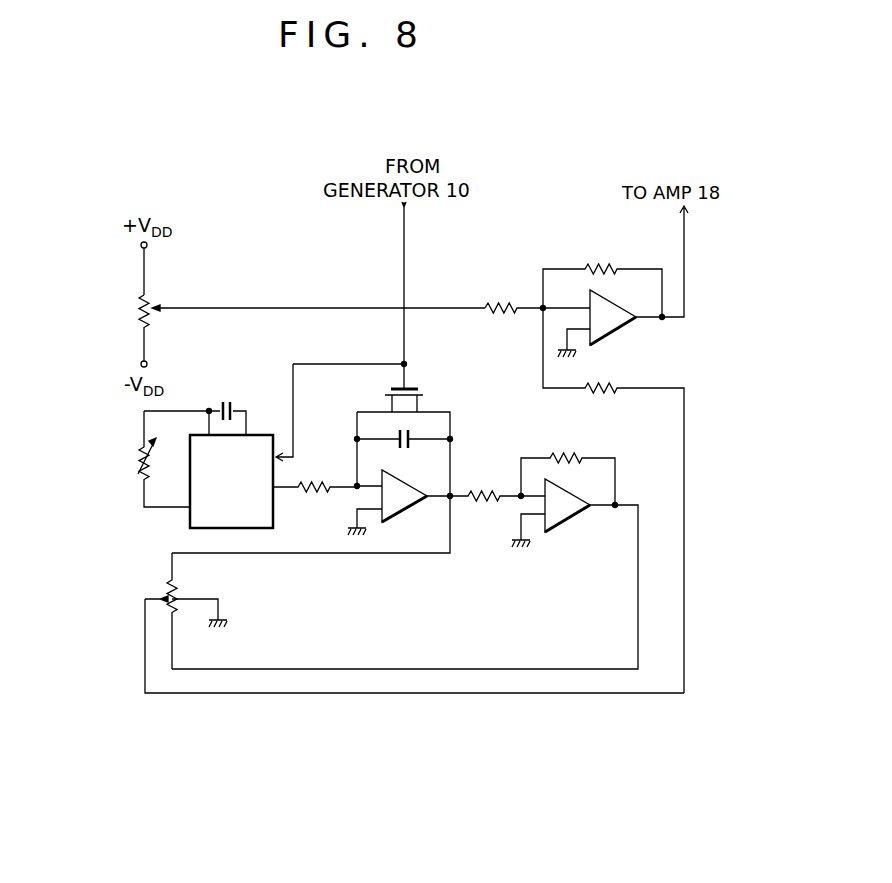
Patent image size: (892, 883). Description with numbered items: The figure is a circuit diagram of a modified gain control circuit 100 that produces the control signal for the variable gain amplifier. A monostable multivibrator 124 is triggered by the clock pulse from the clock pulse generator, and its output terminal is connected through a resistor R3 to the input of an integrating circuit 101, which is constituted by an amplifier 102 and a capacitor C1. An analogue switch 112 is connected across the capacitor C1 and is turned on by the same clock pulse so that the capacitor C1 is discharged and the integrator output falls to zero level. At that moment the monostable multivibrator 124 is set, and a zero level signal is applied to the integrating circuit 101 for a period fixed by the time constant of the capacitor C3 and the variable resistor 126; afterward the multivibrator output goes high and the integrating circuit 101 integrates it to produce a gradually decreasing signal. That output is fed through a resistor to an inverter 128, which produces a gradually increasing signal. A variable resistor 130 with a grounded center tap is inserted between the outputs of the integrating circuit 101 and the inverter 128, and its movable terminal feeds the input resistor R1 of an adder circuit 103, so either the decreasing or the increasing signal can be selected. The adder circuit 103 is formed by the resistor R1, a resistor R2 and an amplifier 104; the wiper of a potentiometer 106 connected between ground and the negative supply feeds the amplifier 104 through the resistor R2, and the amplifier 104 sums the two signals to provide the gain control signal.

The gain control circuit 100 is at (484, 700).
The integrating circuit 101 is at (340, 481).
The amplifier 102 is at (402, 506).
The adder circuit 103 is at (605, 257).
The amplifier 104 is at (618, 322).
The potentiometer 106 is at (134, 310).
The analogue switch 112 is at (418, 384).
The monostable multivibrator 124 is at (265, 517).
The variable resistor 126 is at (135, 467).
The inverter 128 is at (572, 508).
The variable resistor 130 is at (178, 588).
The capacitor C1 is at (406, 449).
The capacitor C3 is at (226, 393).
The resistor R1 is at (607, 394).
The resistor R2 is at (498, 307).
The resistor R3 is at (320, 478).